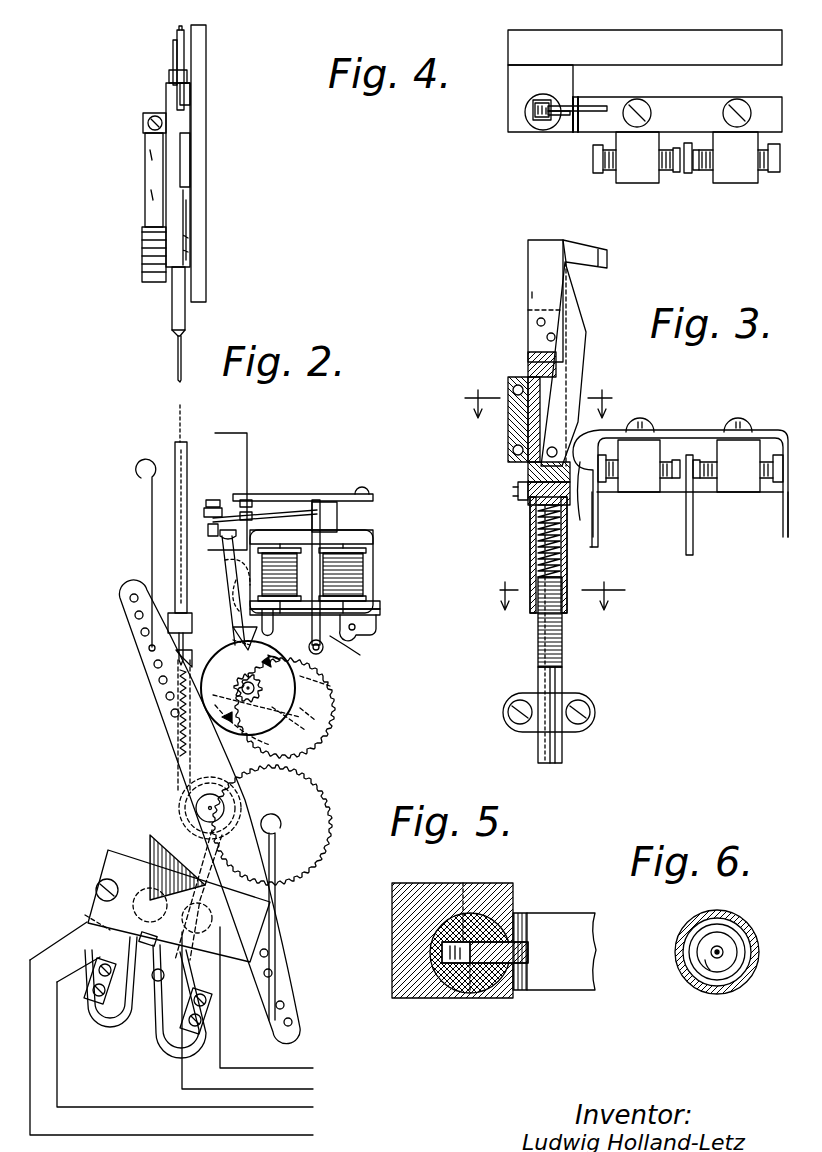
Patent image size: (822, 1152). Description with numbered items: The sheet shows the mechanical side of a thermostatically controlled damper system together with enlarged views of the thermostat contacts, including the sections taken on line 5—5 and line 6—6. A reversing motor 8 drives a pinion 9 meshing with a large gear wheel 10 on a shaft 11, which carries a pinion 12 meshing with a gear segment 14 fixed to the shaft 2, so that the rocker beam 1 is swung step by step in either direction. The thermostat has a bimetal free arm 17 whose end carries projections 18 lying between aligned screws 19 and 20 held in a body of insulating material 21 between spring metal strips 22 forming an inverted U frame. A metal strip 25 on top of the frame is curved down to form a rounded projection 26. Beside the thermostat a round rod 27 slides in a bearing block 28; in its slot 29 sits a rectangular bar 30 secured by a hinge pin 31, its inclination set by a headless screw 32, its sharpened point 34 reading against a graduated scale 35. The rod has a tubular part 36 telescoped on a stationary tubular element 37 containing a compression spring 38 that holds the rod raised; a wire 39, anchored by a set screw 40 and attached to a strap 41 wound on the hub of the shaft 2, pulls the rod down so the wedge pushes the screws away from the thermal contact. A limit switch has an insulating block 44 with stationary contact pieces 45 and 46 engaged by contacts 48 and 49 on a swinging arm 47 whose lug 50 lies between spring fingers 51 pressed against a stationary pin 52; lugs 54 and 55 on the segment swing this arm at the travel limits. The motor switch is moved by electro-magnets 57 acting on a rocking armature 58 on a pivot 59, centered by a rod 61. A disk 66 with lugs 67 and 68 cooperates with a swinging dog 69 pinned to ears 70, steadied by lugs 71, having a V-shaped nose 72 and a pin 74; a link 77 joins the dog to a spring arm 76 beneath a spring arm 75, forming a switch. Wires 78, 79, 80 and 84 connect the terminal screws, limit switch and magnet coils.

In FIG. 2, the rocker beam 1 is at (285, 970).
In FIG. 2, the shaft 2 is at (195, 805).
In FIG. 2, the hook wire 5 is at (285, 886).
In FIG. 3, the hook wire 5 is at (537, 402).
In FIG. 2, the hook rod 6 is at (150, 520).
In FIG. 3, the hook rod 6 is at (554, 594).
In FIG. 2, the reversing motor 8 is at (228, 585).
In FIG. 2, the pinion 9 is at (222, 565).
In FIG. 2, the large gear wheel 10 is at (315, 720).
In FIG. 2, the shaft 11 is at (236, 684).
In FIG. 2, the pinion 12 is at (312, 736).
In FIG. 2, the gear segment 14 is at (298, 790).
In FIG. 2, the free arm of bimetal strip 17 is at (150, 170).
In FIG. 4, the free arm of bimetal strip 17 is at (686, 172).
In FIG. 3, the free arm of bimetal strip 17 is at (695, 552).
In FIG. 4, the projections 18 is at (686, 143).
In FIG. 3, the projections 18 is at (690, 455).
In FIG. 4, the screw 19 is at (598, 172).
In FIG. 3, the screw 19 is at (605, 485).
In FIG. 2, the screw 20 is at (143, 124).
In FIG. 4, the screw 20 is at (775, 172).
In FIG. 3, the screw 20 is at (772, 485).
In FIG. 2, the body of insulating material 21 is at (150, 118).
In FIG. 4, the body of insulating material 21 is at (648, 172).
In FIG. 3, the body of insulating material 21 is at (643, 492).
In FIG. 2, the spring metal strips 22 is at (176, 150).
In FIG. 3, the spring metal strips 22 is at (597, 546).
In FIG. 4, the metal strip 25 is at (690, 105).
In FIG. 3, the metal strip 25 is at (650, 430).
In FIG. 5, the metal strip 25 is at (560, 913).
In FIG. 3, the rounded projection 26 is at (586, 505).
In FIG. 5, the rounded projection 26 is at (522, 985).
In FIG. 2, the rod 27 is at (169, 74).
In FIG. 4, the rod 27 is at (538, 118).
In FIG. 3, the rod 27 is at (530, 488).
In FIG. 5, the rod 27 is at (480, 993).
In FIG. 2, the bearing block 28 is at (189, 93).
In FIG. 3, the bearing block 28 is at (508, 447).
In FIG. 5, the bearing block 28 is at (505, 885).
In FIG. 3, the slot 29 is at (535, 420).
In FIG. 5, the slot 29 is at (447, 988).
In FIG. 2, the rectangular bar 30 is at (173, 48).
In FIG. 4, the rectangular bar 30 is at (545, 112).
In FIG. 3, the rectangular bar 30 is at (580, 325).
In FIG. 5, the rectangular bar 30 is at (528, 952).
In FIG. 3, the hinge pin 31 is at (528, 468).
In FIG. 5, the hinge pin 31 is at (464, 882).
In FIG. 4, the headless screw 32 is at (525, 120).
In FIG. 3, the headless screw 32 is at (528, 360).
In FIG. 3, the point 34 is at (578, 290).
In FIG. 2, the graduated scale 35 is at (184, 56).
In FIG. 4, the graduated scale 35 is at (585, 107).
In FIG. 3, the graduated scale 35 is at (607, 258).
In FIG. 3, the tubular part 36 is at (530, 533).
In FIG. 6, the tubular part 36 is at (727, 928).
In FIG. 2, the stationary tubular element 37 is at (187, 470).
In FIG. 3, the stationary tubular element 37 is at (565, 665).
In FIG. 6, the stationary tubular element 37 is at (730, 938).
In FIG. 3, the compression spring 38 is at (538, 550).
In FIG. 6, the compression spring 38 is at (700, 988).
In FIG. 2, the wire 39 is at (178, 356).
In FIG. 3, the wire 39 is at (530, 507).
In FIG. 6, the wire 39 is at (722, 950).
In FIG. 3, the set screw 40 is at (518, 491).
In FIG. 2, the strap 41 is at (180, 755).
In FIG. 2, the block of insulating material 44 is at (108, 852).
In FIG. 2, the stationary contact piece 45 is at (162, 898).
In FIG. 2, the stationary contact piece 46 is at (196, 909).
In FIG. 2, the arm 47 is at (150, 836).
In FIG. 2, the contact 48 is at (77, 912).
In FIG. 2, the contact 49 is at (161, 930).
In FIG. 2, the lug 50 is at (132, 1020).
In FIG. 2, the spring fingers 51 is at (125, 950).
In FIG. 2, the stationary pin 52 is at (154, 988).
In FIG. 2, the lug 54 is at (240, 745).
In FIG. 2, the lug 55 is at (223, 895).
In FIG. 2, the electro-magnets 57 is at (298, 580).
In FIG. 2, the rocking armature 58 is at (375, 615).
In FIG. 2, the pivot 59 is at (380, 606).
In FIG. 2, the rod 61 is at (320, 535).
In FIG. 2, the disk 66 is at (296, 688).
In FIG. 2, the lugs 67 is at (285, 665).
In FIG. 2, the lugs 68 is at (246, 721).
In FIG. 2, the swinging dog 69 is at (360, 656).
In FIG. 2, the ears 70 is at (372, 640).
In FIG. 2, the lugs 71 is at (274, 630).
In FIG. 2, the V-shaped nose 72 is at (242, 650).
In FIG. 2, the pin 74 is at (235, 638).
In FIG. 2, the spring arm 75 is at (290, 494).
In FIG. 2, the spring arm 76 is at (270, 510).
In FIG. 2, the link 77 is at (222, 540).
In FIG. 2, the wire 78 is at (284, 1005).
In FIG. 2, the wire 79 is at (203, 1052).
In FIG. 2, the wire 80 is at (189, 1055).
In FIG. 2, the wire 84 is at (265, 1018).